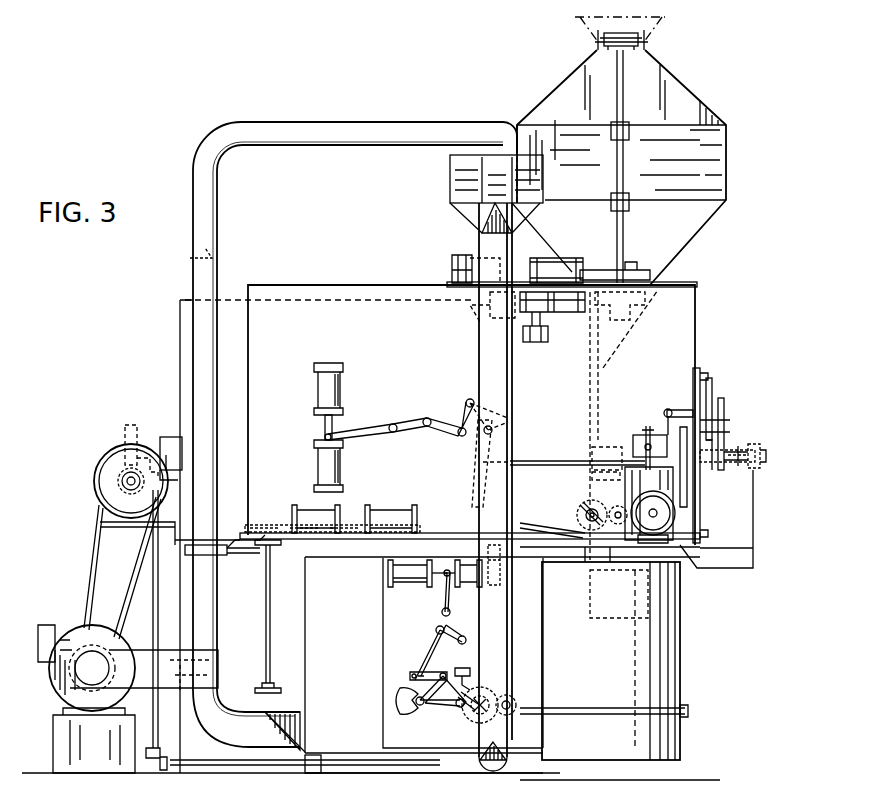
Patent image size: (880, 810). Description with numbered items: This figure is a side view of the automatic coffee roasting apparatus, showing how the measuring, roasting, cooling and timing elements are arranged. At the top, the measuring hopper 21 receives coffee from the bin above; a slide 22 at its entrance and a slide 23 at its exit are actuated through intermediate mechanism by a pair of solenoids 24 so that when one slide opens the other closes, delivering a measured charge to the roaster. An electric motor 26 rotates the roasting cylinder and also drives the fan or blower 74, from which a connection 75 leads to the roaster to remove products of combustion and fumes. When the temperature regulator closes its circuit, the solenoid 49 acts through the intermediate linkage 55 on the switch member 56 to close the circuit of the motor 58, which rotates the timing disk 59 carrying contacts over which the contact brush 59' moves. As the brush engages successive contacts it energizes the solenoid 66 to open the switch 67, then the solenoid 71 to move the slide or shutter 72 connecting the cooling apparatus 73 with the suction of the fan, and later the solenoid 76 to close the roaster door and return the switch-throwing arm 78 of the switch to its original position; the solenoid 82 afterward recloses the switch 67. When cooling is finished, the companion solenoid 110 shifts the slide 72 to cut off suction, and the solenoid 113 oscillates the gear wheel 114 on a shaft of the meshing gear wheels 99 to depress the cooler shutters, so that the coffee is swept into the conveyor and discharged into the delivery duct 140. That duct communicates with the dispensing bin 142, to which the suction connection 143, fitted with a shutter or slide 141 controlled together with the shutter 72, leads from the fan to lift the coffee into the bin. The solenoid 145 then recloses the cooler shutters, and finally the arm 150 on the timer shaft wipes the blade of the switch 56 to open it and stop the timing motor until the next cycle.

The measuring hopper 21 is at (700, 119).
The slide 22 is at (640, 42).
The slide 23 is at (628, 280).
The solenoids 24 is at (470, 256).
The electric motor 26 is at (97, 465).
The solenoid 49 is at (318, 387).
The intermediate linkage 55 is at (437, 412).
The switch member 56 is at (646, 437).
The motor 58 is at (665, 513).
The timing disk 59 is at (716, 455).
The contact brush 59' is at (730, 418).
The solenoid 66 is at (572, 313).
The switch 67 is at (538, 341).
The solenoid 71 is at (394, 510).
The slide or shutter 72 is at (190, 707).
The cooling apparatus 73 is at (665, 680).
The fan or blower 74 is at (62, 678).
The connection 75 is at (210, 258).
The solenoid 76 is at (318, 459).
The switch-throwing arm 78 is at (545, 461).
The solenoid 82 is at (480, 323).
The meshing gear wheels 99 is at (507, 701).
The solenoid 110 is at (306, 508).
The solenoid 113 is at (412, 581).
The gear wheel 114 is at (456, 722).
The delivery duct 140 is at (486, 343).
The shutter or slide 141 is at (216, 556).
The dispensing bin 142 is at (451, 171).
The suction connection 143 is at (218, 206).
The solenoid 145 is at (466, 586).
The arm 150 is at (722, 408).